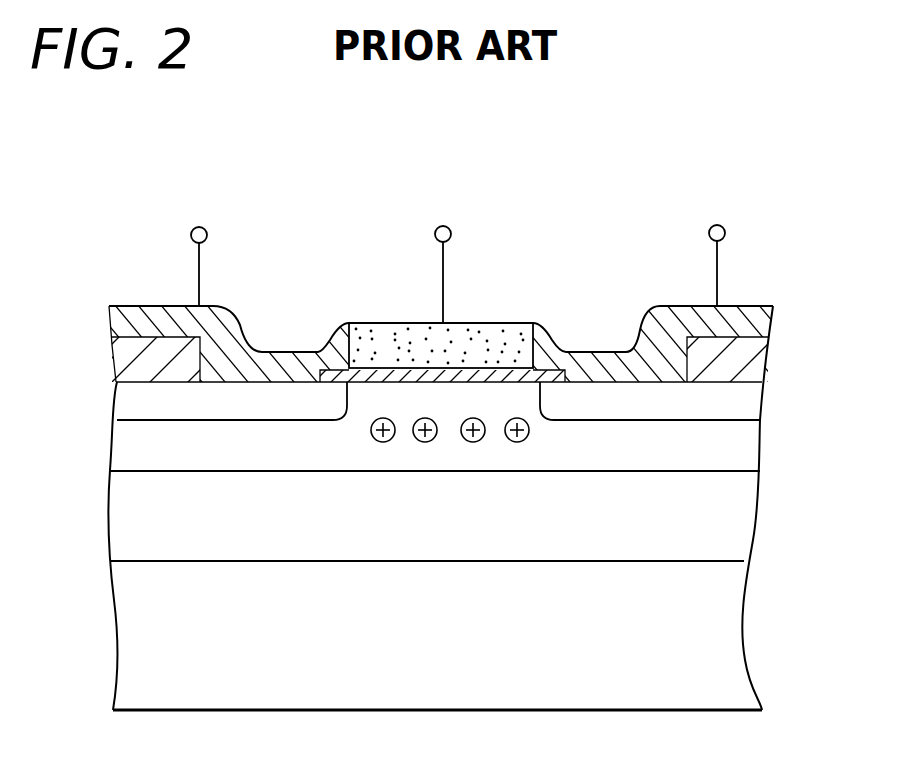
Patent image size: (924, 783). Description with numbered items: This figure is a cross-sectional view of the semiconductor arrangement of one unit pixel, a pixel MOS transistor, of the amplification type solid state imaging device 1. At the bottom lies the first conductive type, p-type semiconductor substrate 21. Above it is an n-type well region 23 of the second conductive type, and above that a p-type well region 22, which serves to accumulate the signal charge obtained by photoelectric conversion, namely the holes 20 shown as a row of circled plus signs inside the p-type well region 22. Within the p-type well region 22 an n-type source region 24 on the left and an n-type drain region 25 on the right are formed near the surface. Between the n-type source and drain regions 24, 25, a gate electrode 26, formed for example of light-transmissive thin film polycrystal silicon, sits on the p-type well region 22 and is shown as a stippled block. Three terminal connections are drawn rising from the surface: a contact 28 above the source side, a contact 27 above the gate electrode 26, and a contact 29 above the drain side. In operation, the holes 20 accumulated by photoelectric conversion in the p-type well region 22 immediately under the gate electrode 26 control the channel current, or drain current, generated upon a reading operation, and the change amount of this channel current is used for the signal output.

The amplification type solid state imaging device 1 is at (392, 173).
The hole 20 is at (517, 443).
The p-type semiconductor substrate 21 is at (458, 693).
The p-type well region 22 is at (128, 452).
The n-type well region 23 is at (133, 532).
The n-type source region 24 is at (130, 404).
The n-type drain region 25 is at (740, 400).
The gate electrode 26 is at (488, 338).
The gate terminal 27 is at (450, 230).
The source terminal 28 is at (206, 231).
The drain terminal 29 is at (725, 230).